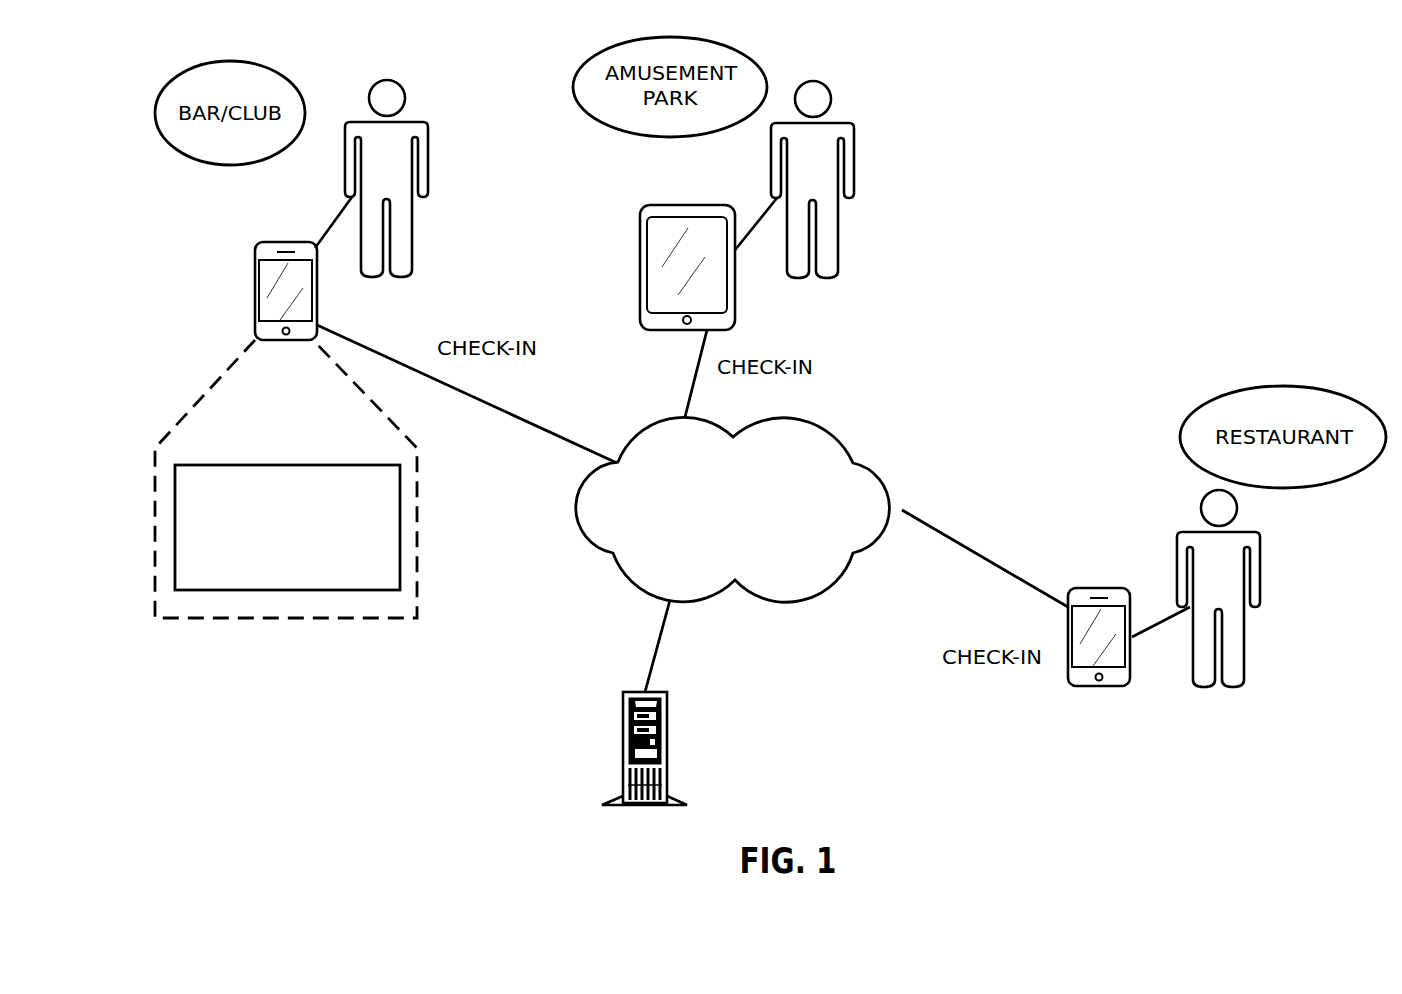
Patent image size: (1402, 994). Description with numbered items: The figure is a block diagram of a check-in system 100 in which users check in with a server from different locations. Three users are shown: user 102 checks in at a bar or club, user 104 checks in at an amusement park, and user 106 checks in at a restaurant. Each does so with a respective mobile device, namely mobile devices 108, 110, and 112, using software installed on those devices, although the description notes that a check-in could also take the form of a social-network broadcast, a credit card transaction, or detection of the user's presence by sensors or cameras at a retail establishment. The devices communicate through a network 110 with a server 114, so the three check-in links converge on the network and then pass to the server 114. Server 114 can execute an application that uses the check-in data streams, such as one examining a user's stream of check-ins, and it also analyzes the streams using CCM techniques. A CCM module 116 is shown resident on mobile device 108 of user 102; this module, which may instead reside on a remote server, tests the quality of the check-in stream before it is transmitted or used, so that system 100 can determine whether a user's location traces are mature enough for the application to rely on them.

The check-in system 100 is at (1213, 108).
The user 102 is at (388, 80).
The user 104 is at (827, 85).
The user 106 is at (1187, 528).
The mobile device 108 is at (255, 275).
The mobile device / network 110 is at (640, 267).
The mobile device 112 is at (1100, 588).
The server 114 is at (667, 712).
The CCM module 116 is at (286, 479).